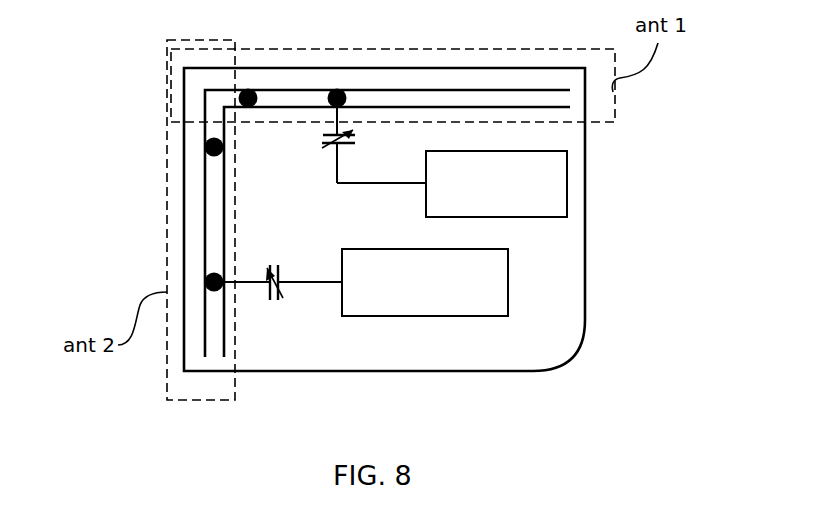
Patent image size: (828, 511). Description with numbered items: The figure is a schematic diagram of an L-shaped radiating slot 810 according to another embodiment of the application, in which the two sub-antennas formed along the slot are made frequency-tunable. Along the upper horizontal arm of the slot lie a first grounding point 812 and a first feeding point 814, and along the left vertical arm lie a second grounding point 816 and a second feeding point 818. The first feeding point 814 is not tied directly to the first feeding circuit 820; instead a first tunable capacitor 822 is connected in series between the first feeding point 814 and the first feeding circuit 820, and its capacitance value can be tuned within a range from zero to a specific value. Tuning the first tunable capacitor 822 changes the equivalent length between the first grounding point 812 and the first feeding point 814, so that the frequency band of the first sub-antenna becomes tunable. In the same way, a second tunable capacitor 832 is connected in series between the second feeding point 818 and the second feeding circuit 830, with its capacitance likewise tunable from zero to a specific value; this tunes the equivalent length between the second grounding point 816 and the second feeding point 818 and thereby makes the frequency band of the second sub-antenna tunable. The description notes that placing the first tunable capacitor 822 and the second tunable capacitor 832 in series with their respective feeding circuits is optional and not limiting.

The L-shaped radiating slot 810 is at (215, 338).
The first grounding point 812 is at (255, 88).
The first feeding point 814 is at (345, 100).
The second grounding point 816 is at (222, 152).
The second feeding point 818 is at (205, 282).
The first feeding circuit 820 is at (452, 184).
The first tunable capacitor 822 is at (316, 145).
The second feeding circuit 830 is at (425, 282).
The second tunable capacitor 832 is at (283, 296).